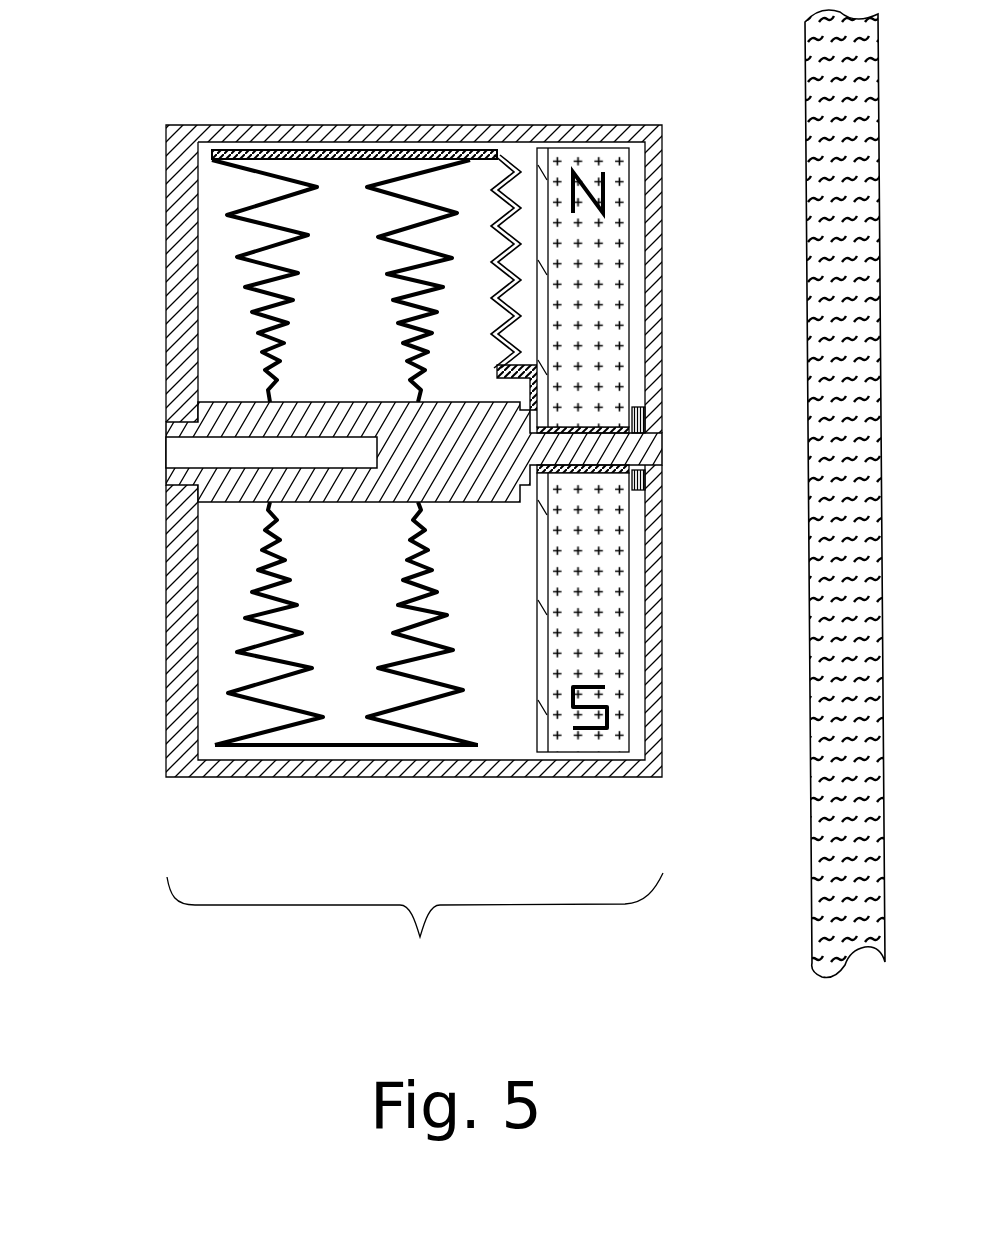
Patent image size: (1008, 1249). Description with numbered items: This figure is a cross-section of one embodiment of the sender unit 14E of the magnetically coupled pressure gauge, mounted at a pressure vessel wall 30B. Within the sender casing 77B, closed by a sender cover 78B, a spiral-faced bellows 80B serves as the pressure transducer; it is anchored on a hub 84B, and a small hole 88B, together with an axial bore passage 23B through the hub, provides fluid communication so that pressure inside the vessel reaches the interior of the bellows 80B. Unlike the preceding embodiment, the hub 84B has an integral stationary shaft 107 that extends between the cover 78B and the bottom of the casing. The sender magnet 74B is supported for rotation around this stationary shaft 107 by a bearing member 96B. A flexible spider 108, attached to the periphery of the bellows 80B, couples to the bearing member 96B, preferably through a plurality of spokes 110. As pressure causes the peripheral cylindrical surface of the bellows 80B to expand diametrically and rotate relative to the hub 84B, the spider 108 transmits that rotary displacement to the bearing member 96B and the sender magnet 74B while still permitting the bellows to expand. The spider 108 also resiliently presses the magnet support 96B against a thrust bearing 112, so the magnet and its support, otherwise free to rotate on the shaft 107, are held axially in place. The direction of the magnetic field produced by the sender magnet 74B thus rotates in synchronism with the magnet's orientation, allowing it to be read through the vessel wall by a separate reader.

The sender unit 14E is at (415, 939).
The plunger 23B is at (175, 453).
The pressure vessel wall 30B is at (808, 755).
The sender magnet 74B is at (603, 287).
The sender casing 77B is at (320, 125).
The sender cover 78B is at (165, 218).
The spiral-faced bellows 80B is at (317, 745).
The hub 84B is at (237, 503).
The hole 88B is at (345, 410).
The bearing member 96B is at (532, 740).
The integral stationary shaft 107 is at (610, 450).
The flexible spider 108 is at (500, 153).
The spoke 110 is at (517, 343).
The thrust bearing 112 is at (645, 412).